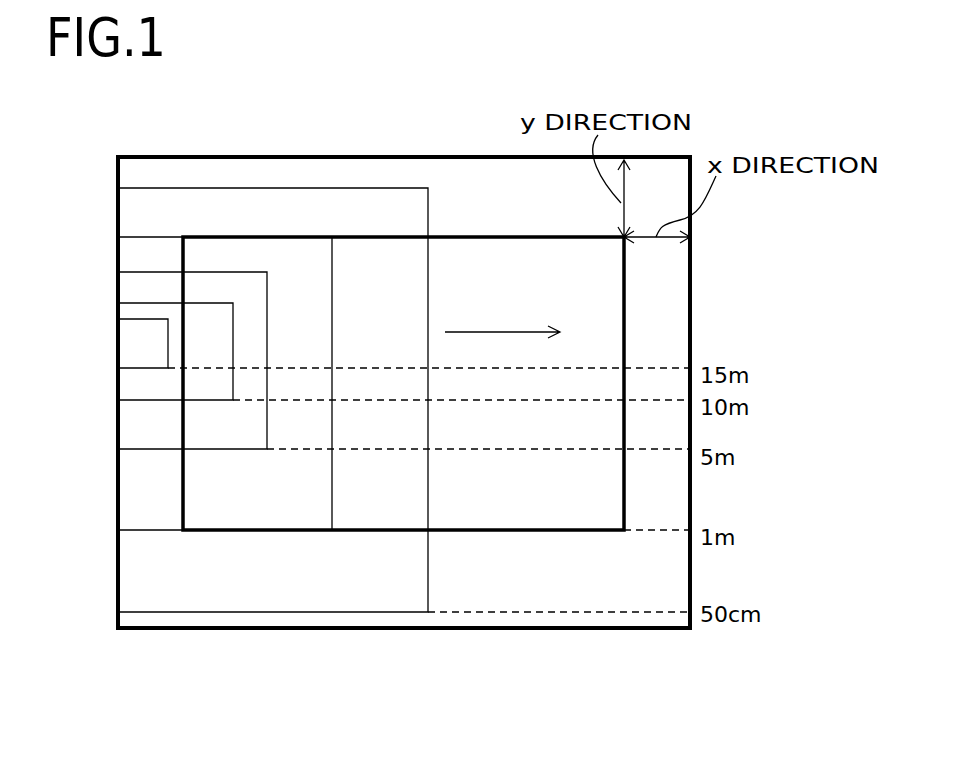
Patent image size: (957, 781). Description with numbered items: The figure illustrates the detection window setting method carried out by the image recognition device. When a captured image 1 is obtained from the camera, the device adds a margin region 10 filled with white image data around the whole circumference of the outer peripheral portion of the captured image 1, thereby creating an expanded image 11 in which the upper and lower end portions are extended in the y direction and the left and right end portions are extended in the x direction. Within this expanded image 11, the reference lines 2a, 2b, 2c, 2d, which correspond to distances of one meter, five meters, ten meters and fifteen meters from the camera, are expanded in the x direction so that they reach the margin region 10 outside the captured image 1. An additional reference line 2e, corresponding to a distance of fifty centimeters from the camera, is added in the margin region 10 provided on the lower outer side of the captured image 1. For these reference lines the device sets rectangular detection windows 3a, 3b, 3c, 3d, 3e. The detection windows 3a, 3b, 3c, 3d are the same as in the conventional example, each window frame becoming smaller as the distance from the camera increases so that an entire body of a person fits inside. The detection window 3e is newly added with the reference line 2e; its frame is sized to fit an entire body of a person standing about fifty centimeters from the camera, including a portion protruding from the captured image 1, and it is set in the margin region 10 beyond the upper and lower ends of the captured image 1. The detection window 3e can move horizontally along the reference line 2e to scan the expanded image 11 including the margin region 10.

The captured image 1 is at (470, 237).
The margin region 10 is at (676, 293).
The expanded image 11 is at (207, 158).
The reference line 2a is at (650, 530).
The reference line 2b is at (650, 450).
The reference line 2c is at (650, 400).
The reference line 2d is at (650, 368).
The reference line 2e is at (660, 632).
The detection window 3a is at (152, 530).
The detection window 3b is at (152, 449).
The detection window 3c is at (142, 400).
The detection window 3d is at (147, 319).
The detection window 3e is at (143, 188).